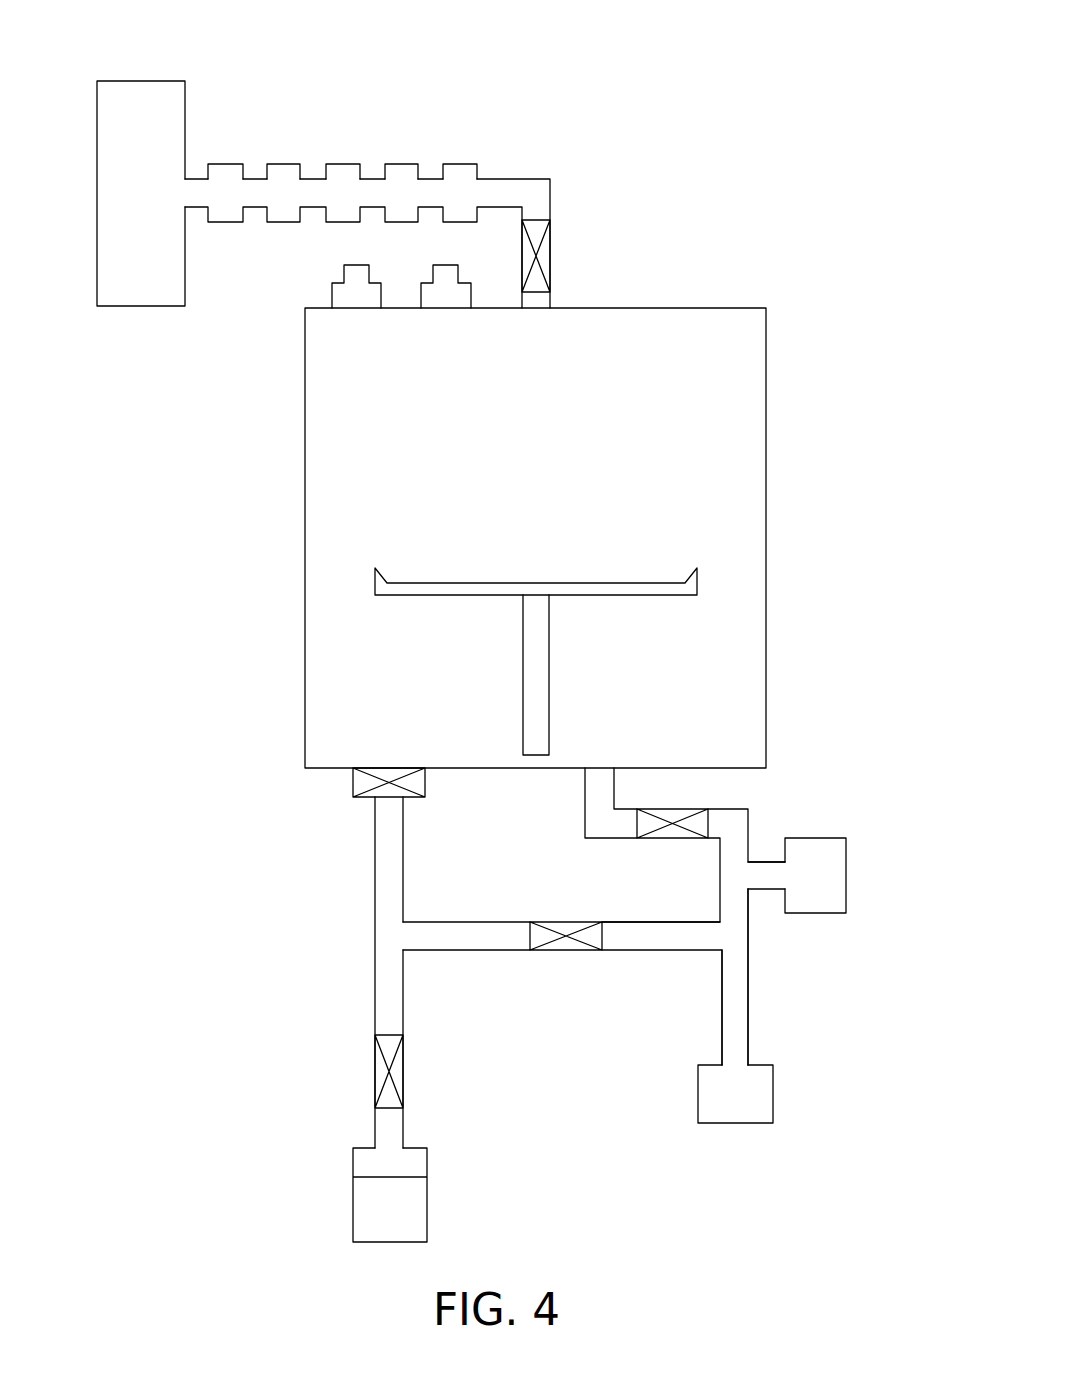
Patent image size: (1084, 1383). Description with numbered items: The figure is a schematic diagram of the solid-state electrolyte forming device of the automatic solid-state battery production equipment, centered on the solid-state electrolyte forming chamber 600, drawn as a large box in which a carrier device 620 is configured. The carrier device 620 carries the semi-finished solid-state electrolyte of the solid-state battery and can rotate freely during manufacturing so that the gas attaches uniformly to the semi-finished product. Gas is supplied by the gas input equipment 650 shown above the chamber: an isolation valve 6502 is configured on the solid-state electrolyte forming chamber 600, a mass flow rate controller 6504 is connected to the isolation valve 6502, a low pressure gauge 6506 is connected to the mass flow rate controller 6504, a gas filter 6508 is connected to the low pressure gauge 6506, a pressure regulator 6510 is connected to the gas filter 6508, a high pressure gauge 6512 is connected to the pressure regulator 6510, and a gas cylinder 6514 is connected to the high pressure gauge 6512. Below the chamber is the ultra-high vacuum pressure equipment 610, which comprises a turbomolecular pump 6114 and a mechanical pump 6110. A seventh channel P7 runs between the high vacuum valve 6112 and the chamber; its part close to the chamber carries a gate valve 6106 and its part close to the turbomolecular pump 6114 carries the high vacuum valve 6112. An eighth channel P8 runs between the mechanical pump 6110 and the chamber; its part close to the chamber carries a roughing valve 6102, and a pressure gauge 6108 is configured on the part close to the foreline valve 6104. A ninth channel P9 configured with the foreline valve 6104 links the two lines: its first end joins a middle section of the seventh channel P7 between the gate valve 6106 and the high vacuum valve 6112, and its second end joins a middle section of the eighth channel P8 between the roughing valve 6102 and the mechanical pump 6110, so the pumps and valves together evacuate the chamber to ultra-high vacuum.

The solid-state electrolyte forming chamber 600 is at (845, 39).
The gas input equipment 650 is at (408, 154).
The gas cylinder 6514 is at (142, 80).
The high pressure gauge 6512 is at (225, 164).
The pressure regulator 6510 is at (283, 164).
The gas filter 6508 is at (346, 164).
The low pressure gauge 6506 is at (402, 164).
The mass flow rate controller 6504 is at (459, 177).
The isolation valve 6502 is at (550, 258).
The carrier device 620 is at (658, 585).
The ultra-high vacuum pressure equipment 610 is at (499, 1008).
The gate valve 6106 is at (353, 785).
The roughing valve 6102 is at (672, 838).
The foreline valve 6104 is at (565, 922).
The pressure gauge 6108 is at (813, 913).
The mechanical pump 6110 is at (733, 1123).
The high vacuum valve 6112 is at (405, 1070).
The turbomolecular pump 6114 is at (350, 1208).
The seventh channel P7 is at (388, 932).
The eighth channel P8 is at (735, 1025).
The ninth channel P9 is at (665, 937).